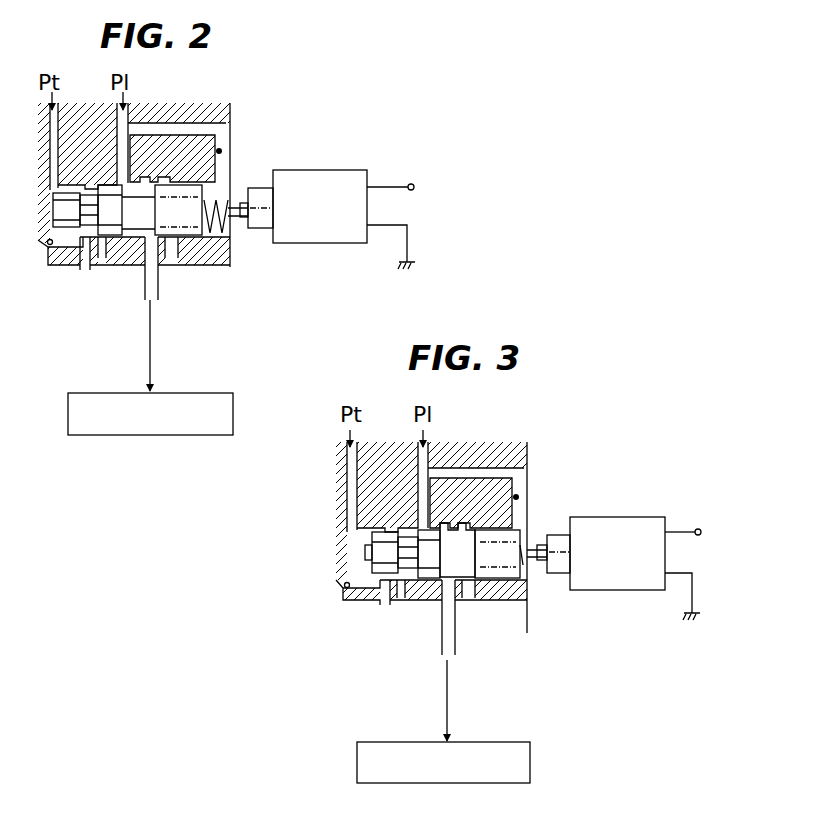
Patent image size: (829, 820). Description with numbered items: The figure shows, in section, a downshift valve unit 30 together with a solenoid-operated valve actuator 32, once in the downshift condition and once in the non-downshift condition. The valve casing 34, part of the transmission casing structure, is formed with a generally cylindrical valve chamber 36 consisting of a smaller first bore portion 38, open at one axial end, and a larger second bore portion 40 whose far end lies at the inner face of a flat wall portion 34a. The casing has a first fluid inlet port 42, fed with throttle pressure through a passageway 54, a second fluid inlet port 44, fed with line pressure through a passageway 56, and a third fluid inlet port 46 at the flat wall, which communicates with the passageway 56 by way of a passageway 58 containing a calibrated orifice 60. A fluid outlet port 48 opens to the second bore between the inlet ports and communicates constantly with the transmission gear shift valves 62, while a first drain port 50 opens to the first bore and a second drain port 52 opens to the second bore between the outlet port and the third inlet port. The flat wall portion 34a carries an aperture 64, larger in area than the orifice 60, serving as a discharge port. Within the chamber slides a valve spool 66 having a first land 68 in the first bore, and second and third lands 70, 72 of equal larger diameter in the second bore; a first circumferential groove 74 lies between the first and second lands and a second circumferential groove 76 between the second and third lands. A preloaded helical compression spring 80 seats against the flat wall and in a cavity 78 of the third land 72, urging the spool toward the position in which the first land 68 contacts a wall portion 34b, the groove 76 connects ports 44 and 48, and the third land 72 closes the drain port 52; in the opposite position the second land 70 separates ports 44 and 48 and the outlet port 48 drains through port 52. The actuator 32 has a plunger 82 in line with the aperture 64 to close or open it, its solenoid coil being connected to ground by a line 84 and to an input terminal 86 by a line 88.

In FIG. 2, the downshift valve unit 30 is at (82, 163).
In FIG. 3, the downshift valve unit 30 is at (380, 495).
In FIG. 2, the solenoid-operated valve actuator 32 is at (330, 170).
In FIG. 3, the solenoid-operated valve actuator 32 is at (608, 517).
In FIG. 2, the valve casing 34 is at (232, 121).
In FIG. 2, the flat wall portion 34a is at (232, 251).
In FIG. 3, the flat wall portion 34a is at (529, 590).
In FIG. 2, the wall portion 34b is at (48, 243).
In FIG. 3, the wall portion 34b is at (345, 570).
In FIG. 2, the valve chamber 36 is at (138, 251).
In FIG. 3, the valve chamber 36 is at (432, 600).
In FIG. 2, the first bore portion 38 is at (55, 210).
In FIG. 3, the first bore portion 38 is at (370, 550).
In FIG. 2, the second bore portion 40 is at (172, 262).
In FIG. 3, the second bore portion 40 is at (473, 595).
In FIG. 2, the first fluid inlet port 42 is at (56, 195).
In FIG. 3, the first fluid inlet port 42 is at (352, 520).
In FIG. 2, the second fluid inlet port 44 is at (118, 181).
In FIG. 3, the second fluid inlet port 44 is at (412, 520).
In FIG. 2, the third fluid inlet port 46 is at (226, 185).
In FIG. 3, the third fluid inlet port 46 is at (524, 528).
In FIG. 2, the fluid outlet port 48 is at (148, 281).
In FIG. 3, the fluid outlet port 48 is at (441, 625).
In FIG. 2, the first drain port 50 is at (85, 266).
In FIG. 3, the first drain port 50 is at (383, 606).
In FIG. 2, the second drain port 52 is at (157, 266).
In FIG. 3, the second drain port 52 is at (458, 600).
In FIG. 2, the passageway 54 is at (50, 112).
In FIG. 3, the passageway 54 is at (347, 452).
In FIG. 2, the passageway 56 is at (130, 113).
In FIG. 3, the passageway 56 is at (430, 458).
In FIG. 2, the passageway 58 is at (175, 129).
In FIG. 3, the passageway 58 is at (476, 470).
In FIG. 2, the calibrated orifice 60 is at (222, 150).
In FIG. 3, the calibrated orifice 60 is at (520, 492).
In FIG. 2, the transmission gear shift valves 62 is at (180, 393).
In FIG. 3, the transmission gear shift valves 62 is at (490, 743).
In FIG. 2, the aperture 64 is at (240, 218).
In FIG. 3, the aperture 64 is at (537, 553).
In FIG. 2, the valve spool 66 is at (148, 222).
In FIG. 3, the valve spool 66 is at (467, 562).
In FIG. 2, the first land 68 is at (58, 181).
In FIG. 3, the first land 68 is at (352, 505).
In FIG. 2, the second land 70 is at (92, 228).
In FIG. 3, the second land 70 is at (392, 540).
In FIG. 2, the third land 72 is at (172, 158).
In FIG. 3, the third land 72 is at (471, 503).
In FIG. 2, the first circumferential groove 74 is at (80, 241).
In FIG. 3, the first circumferential groove 74 is at (378, 585).
In FIG. 2, the second circumferential groove 76 is at (104, 238).
In FIG. 3, the second circumferential groove 76 is at (418, 580).
In FIG. 2, the cavity 78 is at (191, 156).
In FIG. 3, the cavity 78 is at (491, 501).
In FIG. 2, the preloaded helical compression spring 80 is at (216, 238).
In FIG. 3, the preloaded helical compression spring 80 is at (521, 600).
In FIG. 2, the plunger 82 is at (255, 192).
In FIG. 3, the plunger 82 is at (552, 537).
In FIG. 2, the line 84 is at (392, 226).
In FIG. 3, the line 84 is at (680, 575).
In FIG. 2, the input terminal 86 is at (411, 184).
In FIG. 3, the input terminal 86 is at (698, 529).
In FIG. 2, the line 88 is at (388, 187).
In FIG. 3, the line 88 is at (670, 532).